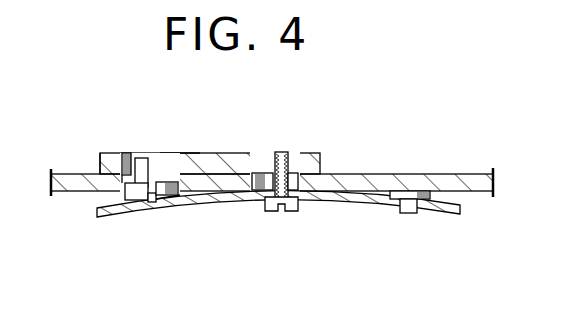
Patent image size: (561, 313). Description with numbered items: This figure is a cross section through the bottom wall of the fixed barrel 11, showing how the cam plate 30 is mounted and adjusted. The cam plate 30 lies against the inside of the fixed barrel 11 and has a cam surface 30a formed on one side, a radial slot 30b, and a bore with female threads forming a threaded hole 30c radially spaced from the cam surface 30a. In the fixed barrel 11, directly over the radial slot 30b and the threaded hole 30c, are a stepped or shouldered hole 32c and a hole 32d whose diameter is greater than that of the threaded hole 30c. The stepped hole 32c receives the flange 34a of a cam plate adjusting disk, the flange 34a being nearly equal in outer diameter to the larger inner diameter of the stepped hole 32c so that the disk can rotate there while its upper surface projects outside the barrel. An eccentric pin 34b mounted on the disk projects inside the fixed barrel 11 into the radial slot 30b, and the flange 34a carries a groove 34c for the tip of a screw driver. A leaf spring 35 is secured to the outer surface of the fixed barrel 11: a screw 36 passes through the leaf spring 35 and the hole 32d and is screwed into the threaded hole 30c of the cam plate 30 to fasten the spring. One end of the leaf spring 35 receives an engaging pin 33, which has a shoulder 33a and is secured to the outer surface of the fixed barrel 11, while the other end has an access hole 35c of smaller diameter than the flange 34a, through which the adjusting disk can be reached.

The fixed barrel 11 is at (398, 172).
The cam plate 30 is at (241, 152).
The cam surface 30a is at (99, 165).
The radial slot 30b is at (178, 153).
The threaded hole 30c is at (282, 152).
The stepped hole 32c is at (154, 168).
The hole 32d is at (258, 200).
The engaging pin 33 is at (409, 214).
The shoulder 33a is at (432, 196).
The flange 34a is at (125, 199).
The eccentric pin 34b is at (137, 157).
The groove 34c is at (152, 212).
The leaf spring 35 is at (353, 200).
The access hole 35c is at (164, 214).
The screw 36 is at (292, 212).